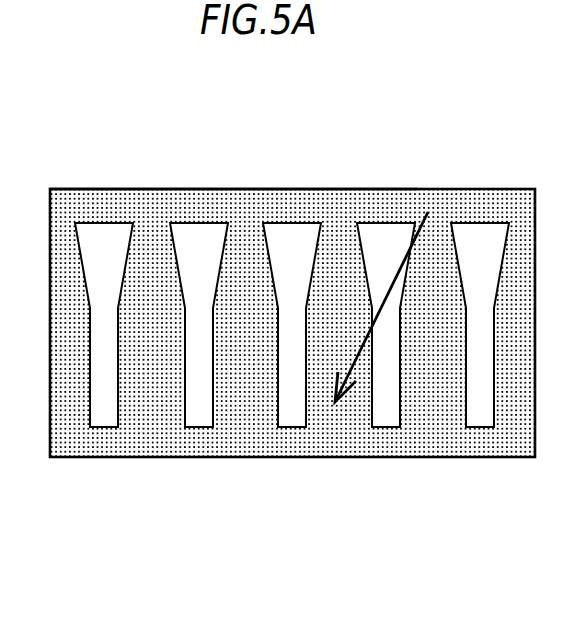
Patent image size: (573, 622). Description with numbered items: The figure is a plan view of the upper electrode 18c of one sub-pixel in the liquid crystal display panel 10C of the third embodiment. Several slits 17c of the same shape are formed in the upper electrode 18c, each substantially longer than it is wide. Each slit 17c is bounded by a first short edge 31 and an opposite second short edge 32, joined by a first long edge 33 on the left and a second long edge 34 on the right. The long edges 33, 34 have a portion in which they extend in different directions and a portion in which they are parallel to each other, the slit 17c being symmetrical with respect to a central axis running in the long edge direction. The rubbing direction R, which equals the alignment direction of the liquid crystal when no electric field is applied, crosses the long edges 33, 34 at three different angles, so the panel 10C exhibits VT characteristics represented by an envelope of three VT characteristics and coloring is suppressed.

The liquid crystal display panel 10C is at (61, 96).
The slit 17c is at (98, 240).
The upper electrode 18c is at (343, 205).
The first short edge 31 is at (197, 225).
The second short edge 32 is at (200, 428).
The first long edge 33 is at (185, 362).
The second long edge 34 is at (214, 376).
The rubbing direction R is at (393, 291).